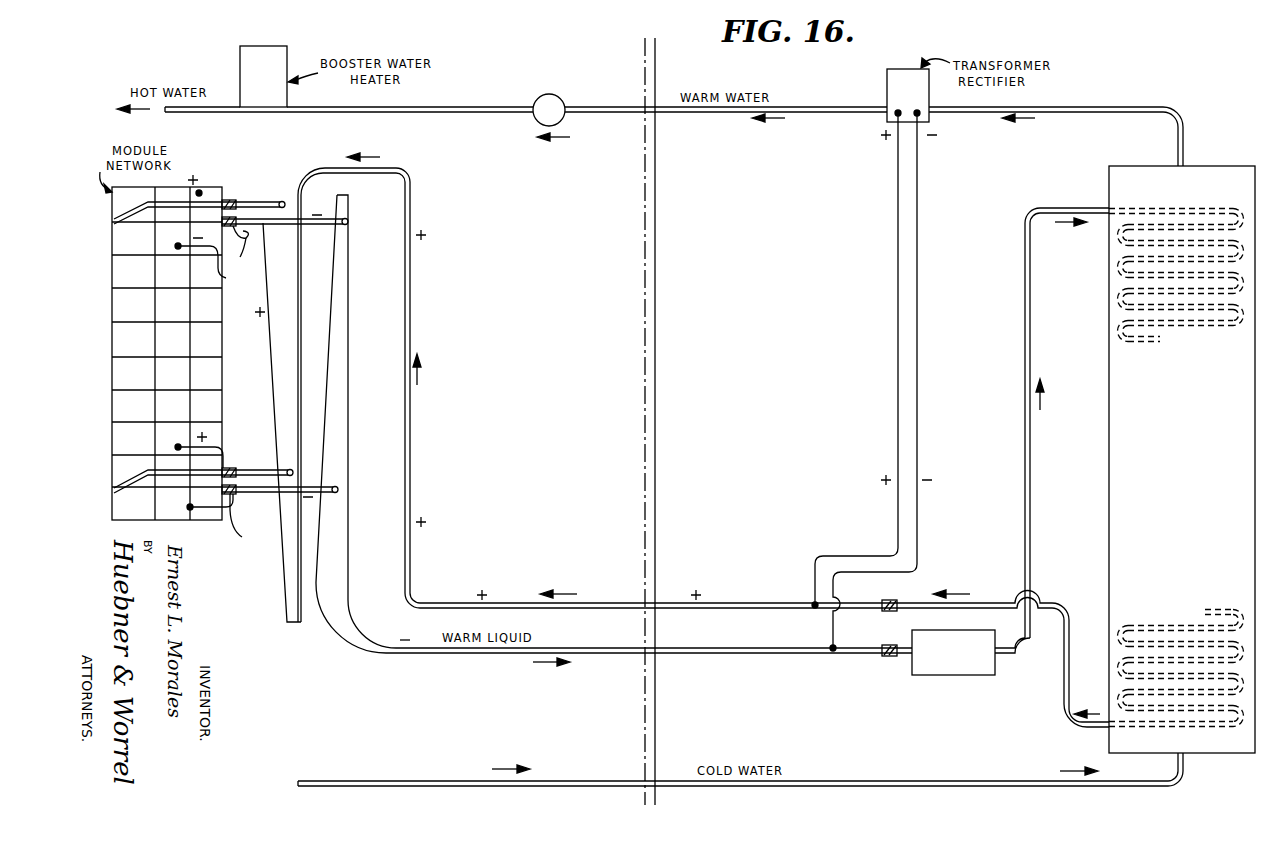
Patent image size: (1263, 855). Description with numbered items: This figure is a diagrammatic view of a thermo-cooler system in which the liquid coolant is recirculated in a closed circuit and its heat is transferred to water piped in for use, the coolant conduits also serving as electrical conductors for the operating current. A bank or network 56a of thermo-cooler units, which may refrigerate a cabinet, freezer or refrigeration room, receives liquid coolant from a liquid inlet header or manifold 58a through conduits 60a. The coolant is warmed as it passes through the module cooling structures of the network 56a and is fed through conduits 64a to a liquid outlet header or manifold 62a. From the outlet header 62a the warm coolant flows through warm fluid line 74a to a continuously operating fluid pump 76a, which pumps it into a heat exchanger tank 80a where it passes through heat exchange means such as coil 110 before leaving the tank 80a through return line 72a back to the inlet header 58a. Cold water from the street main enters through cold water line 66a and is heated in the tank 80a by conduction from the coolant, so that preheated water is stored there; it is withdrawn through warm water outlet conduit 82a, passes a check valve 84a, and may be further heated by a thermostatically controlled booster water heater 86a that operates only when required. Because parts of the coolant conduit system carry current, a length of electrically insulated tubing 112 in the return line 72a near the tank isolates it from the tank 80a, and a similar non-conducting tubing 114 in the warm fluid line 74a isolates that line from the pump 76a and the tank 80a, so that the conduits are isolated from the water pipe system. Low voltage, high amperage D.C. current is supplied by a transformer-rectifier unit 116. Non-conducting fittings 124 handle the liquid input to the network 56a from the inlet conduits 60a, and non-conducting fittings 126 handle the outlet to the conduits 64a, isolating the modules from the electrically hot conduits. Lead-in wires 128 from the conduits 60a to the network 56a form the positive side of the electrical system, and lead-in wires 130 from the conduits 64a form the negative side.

The bank or network of thermo-cooler units 56a is at (203, 522).
The liquid inlet header or manifold 58a is at (300, 337).
The inlet conduits 60a is at (253, 201).
The liquid outlet header or manifold 62a is at (348, 374).
The outlet conduits 64a is at (342, 222).
The cold water line 66a is at (850, 780).
The return line 72a is at (412, 438).
The warm fluid line 74a is at (472, 653).
The fluid pump 76a is at (953, 676).
The heat exchanger tank 80a is at (1118, 483).
The warm water outlet conduit 82a is at (1097, 107).
The check valve 84a is at (566, 80).
The booster water heater 86a is at (266, 48).
The coil 110 is at (1192, 207).
The electrically insulated tubing 112 is at (897, 604).
The electrically non-conducting tubing 114 is at (893, 656).
The transformer-rectifier unit 116 is at (887, 83).
The non-conducting fittings 124 is at (248, 191).
The non-conducting fittings 126 is at (248, 389).
The lead-in wires 128 is at (199, 192).
The lead-in wires 130 is at (250, 516).